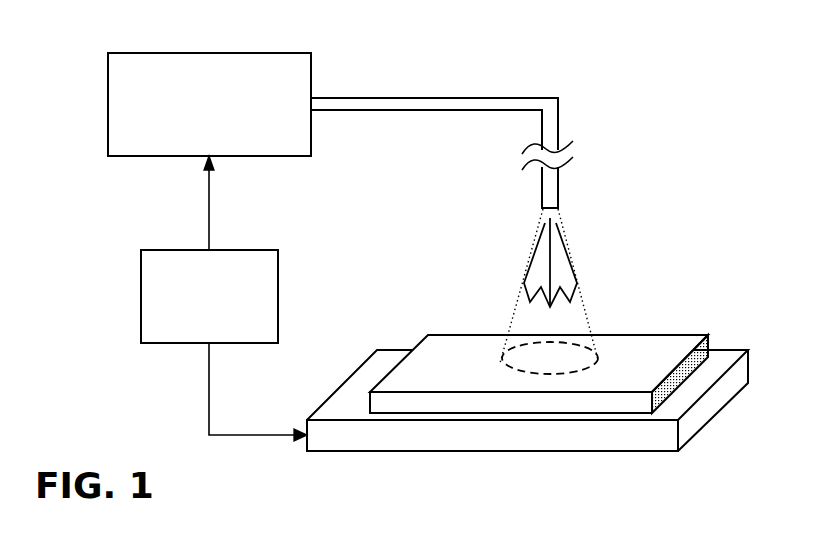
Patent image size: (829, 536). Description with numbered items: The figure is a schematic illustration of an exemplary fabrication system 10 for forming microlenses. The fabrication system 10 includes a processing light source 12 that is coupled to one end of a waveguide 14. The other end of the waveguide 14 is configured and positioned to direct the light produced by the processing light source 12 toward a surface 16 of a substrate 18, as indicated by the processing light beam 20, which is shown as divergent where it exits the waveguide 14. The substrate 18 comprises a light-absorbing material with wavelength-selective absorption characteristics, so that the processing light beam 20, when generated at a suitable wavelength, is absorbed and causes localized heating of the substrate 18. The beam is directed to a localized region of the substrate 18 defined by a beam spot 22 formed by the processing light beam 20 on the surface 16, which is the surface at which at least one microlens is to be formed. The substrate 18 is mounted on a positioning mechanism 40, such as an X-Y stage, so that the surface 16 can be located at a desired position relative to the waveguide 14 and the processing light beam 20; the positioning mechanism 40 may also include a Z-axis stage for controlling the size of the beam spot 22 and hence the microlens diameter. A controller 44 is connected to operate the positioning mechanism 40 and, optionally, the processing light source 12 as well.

The fabrication system 10 is at (467, 49).
The processing light source 12 is at (195, 116).
The waveguide 14 is at (559, 98).
The surface 16 is at (470, 348).
The substrate 18 is at (661, 346).
The processing light beam 20 is at (567, 273).
The beam spot 22 is at (540, 374).
The positioning mechanism 40 is at (608, 442).
The controller 44 is at (186, 309).